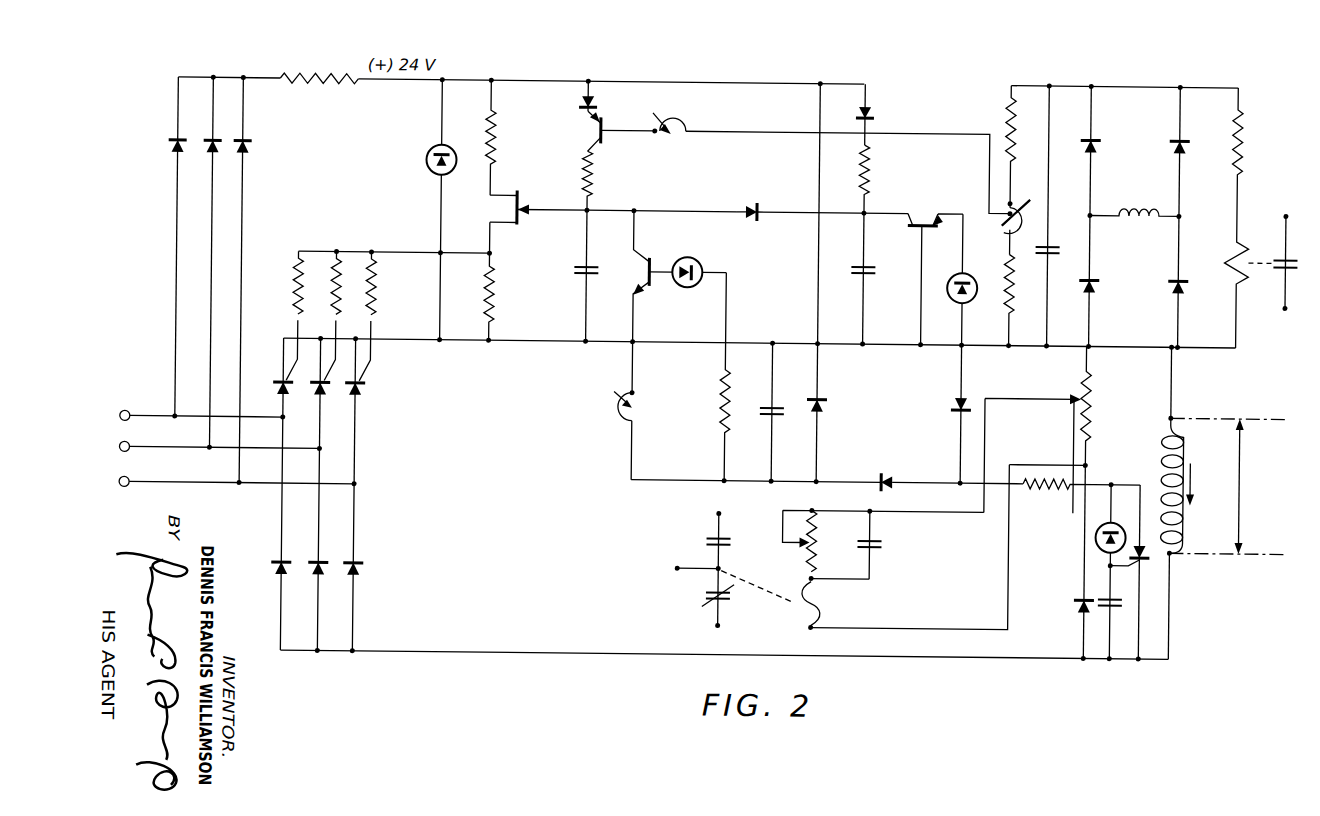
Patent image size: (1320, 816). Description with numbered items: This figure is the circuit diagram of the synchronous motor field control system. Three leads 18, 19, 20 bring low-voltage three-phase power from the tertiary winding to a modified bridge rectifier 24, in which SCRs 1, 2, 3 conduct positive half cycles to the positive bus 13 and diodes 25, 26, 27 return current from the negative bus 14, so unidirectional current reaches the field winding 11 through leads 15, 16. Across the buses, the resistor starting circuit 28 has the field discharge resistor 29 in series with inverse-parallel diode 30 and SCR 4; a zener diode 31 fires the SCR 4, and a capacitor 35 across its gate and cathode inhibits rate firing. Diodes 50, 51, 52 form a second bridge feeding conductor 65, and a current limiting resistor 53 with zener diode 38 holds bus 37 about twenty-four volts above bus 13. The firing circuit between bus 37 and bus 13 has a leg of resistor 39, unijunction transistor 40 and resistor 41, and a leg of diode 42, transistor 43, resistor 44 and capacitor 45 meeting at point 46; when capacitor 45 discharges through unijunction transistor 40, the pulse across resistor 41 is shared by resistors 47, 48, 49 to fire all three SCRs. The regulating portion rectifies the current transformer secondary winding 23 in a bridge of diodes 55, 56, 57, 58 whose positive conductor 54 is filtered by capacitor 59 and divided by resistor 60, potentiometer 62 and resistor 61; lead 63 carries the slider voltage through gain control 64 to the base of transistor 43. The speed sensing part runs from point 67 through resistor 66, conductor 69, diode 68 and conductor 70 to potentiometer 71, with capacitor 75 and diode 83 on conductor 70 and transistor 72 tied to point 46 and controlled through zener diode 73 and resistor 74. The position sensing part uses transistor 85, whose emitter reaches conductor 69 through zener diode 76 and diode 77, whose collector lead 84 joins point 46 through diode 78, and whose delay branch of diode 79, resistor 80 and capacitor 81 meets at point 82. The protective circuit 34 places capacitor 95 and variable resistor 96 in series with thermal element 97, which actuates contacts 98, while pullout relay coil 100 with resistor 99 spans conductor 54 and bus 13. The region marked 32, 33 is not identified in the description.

The silicon controlled rectifier 1 is at (277, 389).
The silicon controlled rectifier 2 is at (320, 387).
The silicon controlled rectifier 3 is at (360, 389).
The SCR 4 is at (1148, 564).
The field winding 11 is at (1162, 453).
The positive bus 13 is at (533, 347).
The negative bus 14 is at (580, 658).
The lead 15 is at (1172, 380).
The lead 16 is at (1173, 626).
The lead 18 is at (160, 418).
The lead 19 is at (168, 454).
The lead 20 is at (179, 489).
The secondary winding 23 is at (1136, 219).
The rectifier 24 is at (322, 442).
The diode 25 is at (278, 574).
The diode 26 is at (318, 578).
The diode 27 is at (356, 578).
The resistor starting circuit 28 is at (1100, 471).
The field discharge resistor 29 is at (1090, 408).
The diode 30 is at (1080, 605).
The zener diode 31 is at (1098, 532).
The control circuit 32 is at (943, 120).
The control circuit 33 is at (983, 130).
The squirrel cage protective circuit 34 is at (908, 586).
The capacitor 35 is at (1112, 610).
The bus 37 is at (664, 80).
The zener diode 38 is at (424, 158).
The resistor 39 is at (496, 146).
The unijunction transistor 40 is at (498, 210).
The resistor 41 is at (492, 292).
The diode 42 is at (574, 101).
The transistor 43 is at (593, 130).
The resistor 44 is at (580, 179).
The capacitor 45 is at (578, 274).
The point 46 is at (582, 214).
The resistor 47 is at (295, 286).
The resistor 48 is at (340, 266).
The resistor 49 is at (375, 288).
The diode 50 is at (170, 154).
The diode 51 is at (206, 154).
The diode 52 is at (243, 152).
The current limiting resistor 53 is at (316, 80).
The conductor 54 is at (1162, 83).
The diode 55 is at (1094, 143).
The diode 56 is at (1094, 286).
The diode 57 is at (1182, 150).
The diode 58 is at (1180, 286).
The capacitor 59 is at (1048, 226).
The resistor 60 is at (1012, 133).
The resistor 61 is at (1004, 302).
The potentiometer 62 is at (1013, 228).
The lead 63 is at (767, 131).
The gain control 64 is at (674, 120).
The conductor 65 is at (240, 80).
The resistor 66 is at (1046, 486).
The point 67 is at (1080, 460).
The diode 68 is at (882, 477).
The conductor 69 is at (969, 465).
The conductor 70 is at (836, 479).
The potentiometer 71 is at (620, 420).
The transistor 72 is at (640, 278).
The zener diode 73 is at (698, 264).
The resistor 74 is at (723, 424).
The capacitor 75 is at (774, 406).
The zener diode 76 is at (958, 276).
The diode 77 is at (956, 410).
The diode 78 is at (747, 204).
The diode 79 is at (868, 113).
The resistor 80 is at (870, 172).
The capacitor 81 is at (871, 272).
The point 82 is at (870, 208).
The diode 83 is at (822, 411).
The collector lead 84 is at (778, 211).
The transistor 85 is at (936, 214).
The capacitor 95 is at (886, 546).
The variable resistor 96 is at (820, 549).
The thermal element 97 is at (836, 608).
The contacts 98 is at (712, 564).
The resistor 99 is at (1240, 148).
The coil 100 is at (1242, 239).